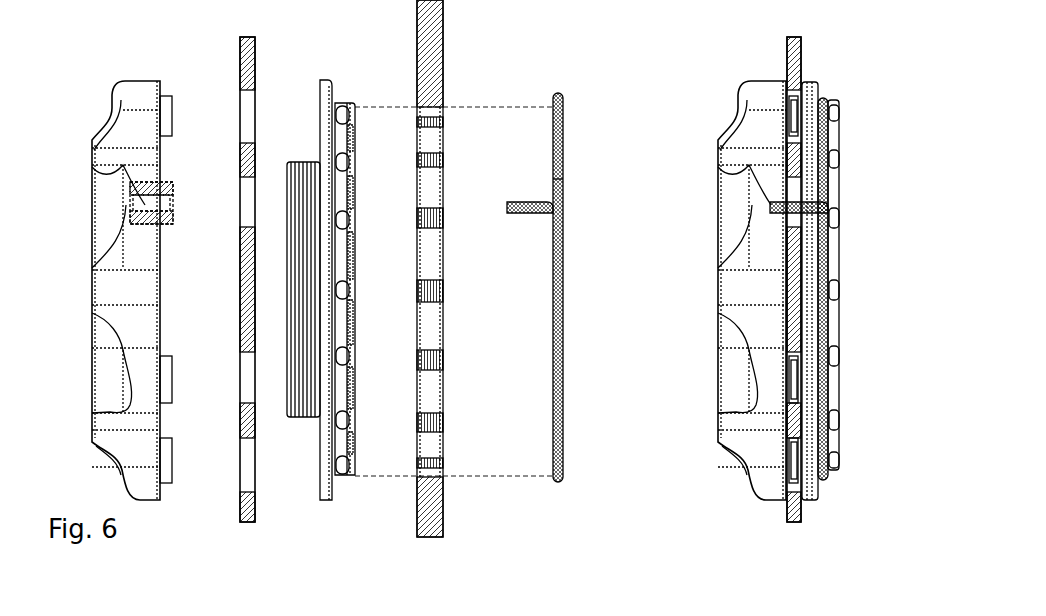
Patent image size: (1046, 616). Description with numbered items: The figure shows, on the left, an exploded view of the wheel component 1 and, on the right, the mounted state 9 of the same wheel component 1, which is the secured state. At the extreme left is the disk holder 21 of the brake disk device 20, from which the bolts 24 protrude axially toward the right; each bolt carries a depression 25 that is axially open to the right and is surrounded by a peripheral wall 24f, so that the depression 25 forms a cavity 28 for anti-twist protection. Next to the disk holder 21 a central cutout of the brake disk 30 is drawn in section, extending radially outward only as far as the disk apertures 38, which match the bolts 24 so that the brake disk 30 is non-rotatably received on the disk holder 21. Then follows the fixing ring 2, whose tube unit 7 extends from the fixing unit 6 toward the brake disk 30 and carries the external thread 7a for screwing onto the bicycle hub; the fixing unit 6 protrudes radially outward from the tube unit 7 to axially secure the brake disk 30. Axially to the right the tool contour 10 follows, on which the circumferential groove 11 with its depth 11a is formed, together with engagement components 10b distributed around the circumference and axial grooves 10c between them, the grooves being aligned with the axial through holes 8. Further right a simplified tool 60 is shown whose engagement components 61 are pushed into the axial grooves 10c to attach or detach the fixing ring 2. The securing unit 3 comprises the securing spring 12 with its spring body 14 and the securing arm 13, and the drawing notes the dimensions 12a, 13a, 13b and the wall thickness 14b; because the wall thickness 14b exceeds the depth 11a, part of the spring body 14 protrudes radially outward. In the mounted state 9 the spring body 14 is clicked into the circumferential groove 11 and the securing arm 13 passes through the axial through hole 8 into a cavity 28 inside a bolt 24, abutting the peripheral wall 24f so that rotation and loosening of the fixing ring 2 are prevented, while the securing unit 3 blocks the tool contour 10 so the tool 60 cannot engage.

The wheel component 1 is at (909, 62).
The fixing ring 2 is at (583, 283).
The securing unit 3 is at (665, 253).
The fixing unit 6 is at (328, 76).
The tube unit 7 is at (303, 224).
The thread 7a is at (297, 158).
The axial through hole 8 is at (343, 162).
The mounted state 9 is at (857, 62).
The tool contour 10 is at (374, 325).
The engagement components 10b is at (352, 396).
The axial grooves 10c is at (344, 228).
The circumferential groove 11 is at (317, 486).
The depth 11a is at (310, 479).
The securing spring 12 is at (646, 268).
The bracket height 12a is at (588, 471).
The securing arm 13 is at (530, 206).
The flange length 13a is at (553, 232).
The flange thickness 13b is at (497, 215).
The spring body 14 is at (556, 152).
The wall thickness 14b is at (563, 316).
The brake disk device 20 is at (462, 265).
The disk holder 21 is at (143, 72).
The bolts 24 is at (173, 116).
The peripheral wall 24f is at (150, 208).
The depression 25 is at (183, 372).
The cavity 28 is at (240, 196).
The brake disk 30 is at (501, 275).
The disk apertures 38 is at (246, 125).
The tool 60 is at (449, 268).
The engagement components 61 is at (442, 420).